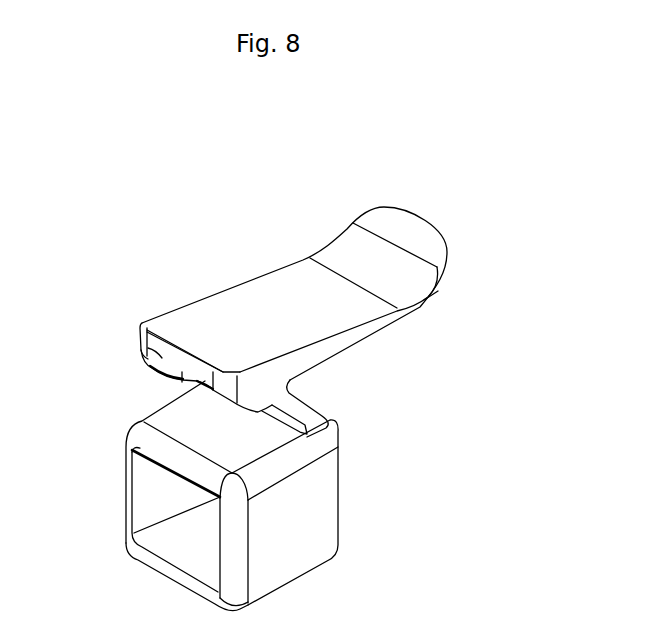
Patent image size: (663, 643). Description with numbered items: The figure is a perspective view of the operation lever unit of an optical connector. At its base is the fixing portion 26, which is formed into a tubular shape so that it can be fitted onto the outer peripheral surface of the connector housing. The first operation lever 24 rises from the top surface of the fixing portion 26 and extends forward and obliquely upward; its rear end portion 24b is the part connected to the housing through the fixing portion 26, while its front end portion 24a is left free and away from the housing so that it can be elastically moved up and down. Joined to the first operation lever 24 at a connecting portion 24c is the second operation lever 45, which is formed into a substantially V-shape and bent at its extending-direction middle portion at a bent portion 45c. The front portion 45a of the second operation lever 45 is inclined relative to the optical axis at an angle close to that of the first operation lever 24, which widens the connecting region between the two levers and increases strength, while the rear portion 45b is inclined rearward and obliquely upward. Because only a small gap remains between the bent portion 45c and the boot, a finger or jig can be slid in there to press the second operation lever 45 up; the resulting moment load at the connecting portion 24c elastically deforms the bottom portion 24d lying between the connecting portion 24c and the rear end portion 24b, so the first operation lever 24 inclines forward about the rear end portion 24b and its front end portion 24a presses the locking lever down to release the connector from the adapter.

The first operation lever 24 is at (163, 330).
The front end portion 24a is at (141, 349).
The rear end portion 24b is at (338, 440).
The connecting portion 24c is at (253, 384).
The bottom portion 24d is at (300, 410).
The fixing portion 26 is at (293, 547).
The second operation lever 45 is at (302, 282).
The front portion 45a is at (257, 293).
The rear portion 45b is at (357, 243).
The bent portion 45c is at (423, 304).